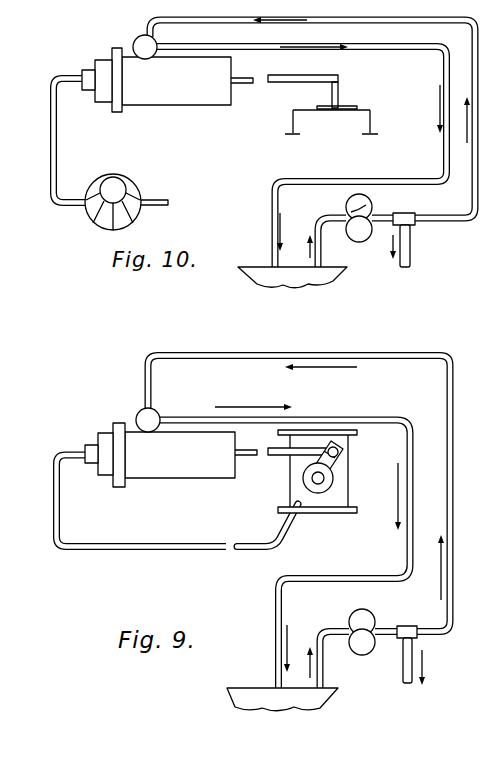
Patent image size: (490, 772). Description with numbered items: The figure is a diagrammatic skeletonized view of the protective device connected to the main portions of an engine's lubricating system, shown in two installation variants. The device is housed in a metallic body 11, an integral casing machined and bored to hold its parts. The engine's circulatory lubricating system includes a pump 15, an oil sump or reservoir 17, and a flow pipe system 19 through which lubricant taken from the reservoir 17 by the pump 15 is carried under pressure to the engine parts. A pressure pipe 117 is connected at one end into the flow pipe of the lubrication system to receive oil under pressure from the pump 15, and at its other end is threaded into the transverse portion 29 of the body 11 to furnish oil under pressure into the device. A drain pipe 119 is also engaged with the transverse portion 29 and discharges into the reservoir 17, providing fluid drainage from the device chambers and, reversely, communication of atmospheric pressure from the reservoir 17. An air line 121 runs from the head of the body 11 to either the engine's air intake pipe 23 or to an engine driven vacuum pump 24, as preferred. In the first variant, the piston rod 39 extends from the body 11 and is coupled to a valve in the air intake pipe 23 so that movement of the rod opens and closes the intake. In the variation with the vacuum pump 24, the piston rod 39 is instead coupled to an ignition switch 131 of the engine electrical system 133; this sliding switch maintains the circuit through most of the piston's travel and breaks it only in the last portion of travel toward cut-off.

In FIG. 10, the metallic body 11 is at (167, 97).
In FIG. 9, the metallic body 11 is at (170, 475).
In FIG. 10, the pump 15 is at (362, 242).
In FIG. 9, the pump 15 is at (365, 612).
In FIG. 10, the oil sump or reservoir 17 is at (262, 275).
In FIG. 9, the oil sump or reservoir 17 is at (317, 705).
In FIG. 10, the flow pipe system 19 is at (412, 253).
In FIG. 9, the flow pipe system 19 is at (403, 676).
In FIG. 9, the air intake pipe 23 is at (336, 497).
In FIG. 10, the vacuum pump 24 is at (137, 194).
In FIG. 10, the transverse portion 29 is at (137, 44).
In FIG. 9, the transverse portion 29 is at (139, 414).
In FIG. 10, the piston rod 39 is at (256, 84).
In FIG. 9, the piston rod 39 is at (254, 457).
In FIG. 10, the pressure pipe 117 is at (223, 26).
In FIG. 9, the pressure pipe 117 is at (333, 350).
In FIG. 10, the drain pipe 119 is at (357, 43).
In FIG. 9, the drain pipe 119 is at (381, 397).
In FIG. 10, the air line 121 is at (57, 142).
In FIG. 9, the air line 121 is at (165, 548).
In FIG. 10, the ignition switch 131 is at (358, 105).
In FIG. 10, the engine electrical system 133 is at (371, 124).